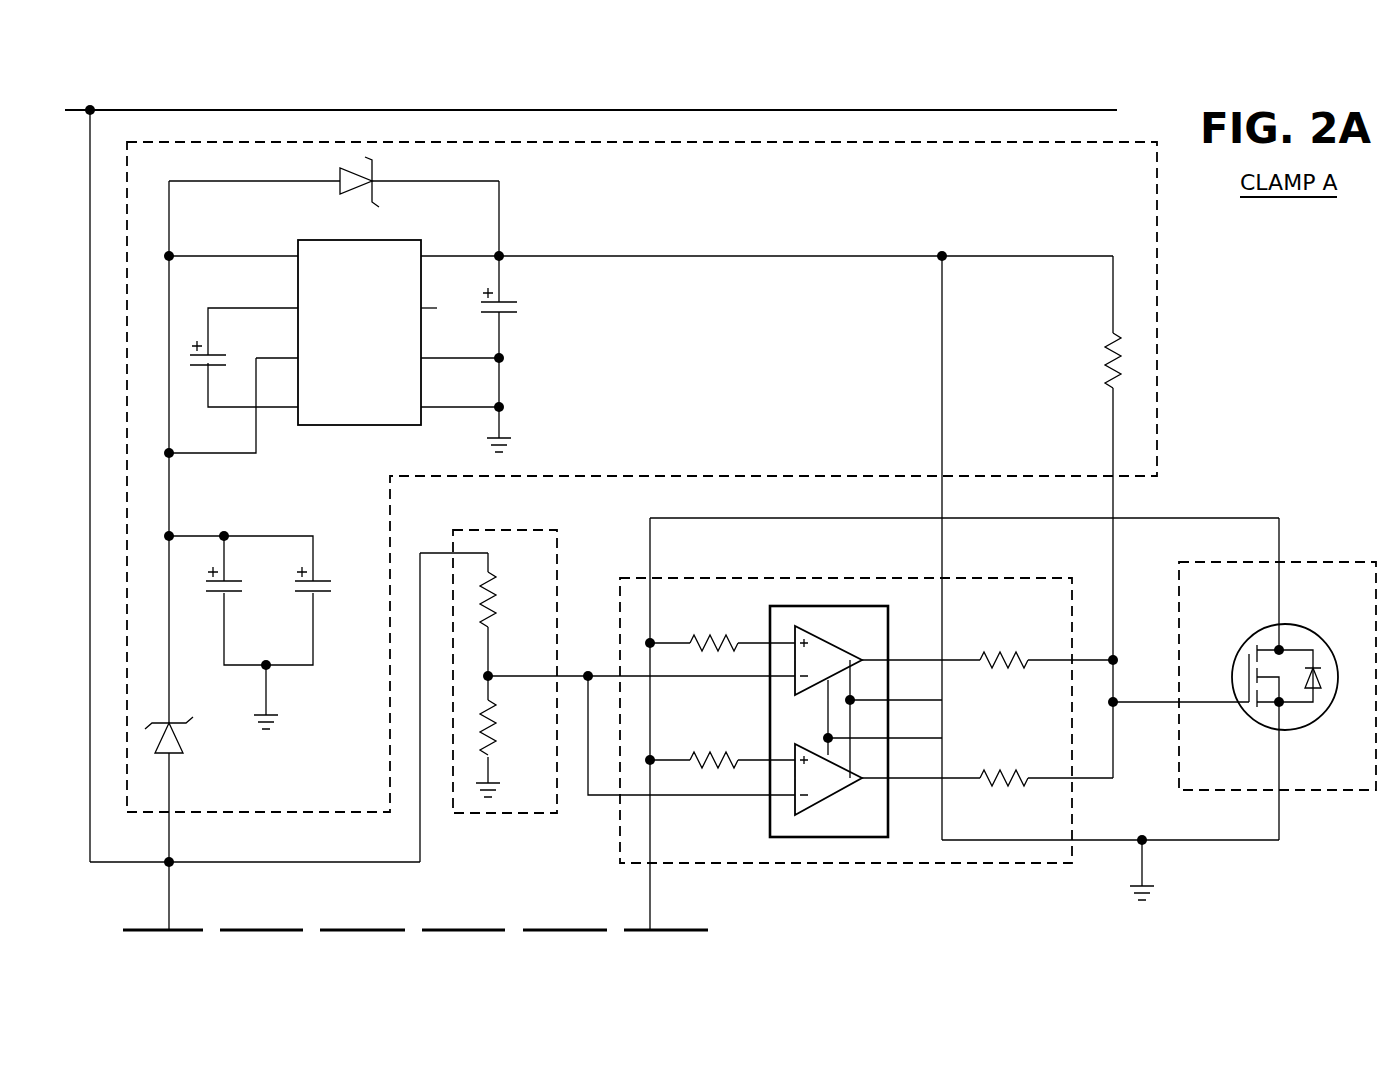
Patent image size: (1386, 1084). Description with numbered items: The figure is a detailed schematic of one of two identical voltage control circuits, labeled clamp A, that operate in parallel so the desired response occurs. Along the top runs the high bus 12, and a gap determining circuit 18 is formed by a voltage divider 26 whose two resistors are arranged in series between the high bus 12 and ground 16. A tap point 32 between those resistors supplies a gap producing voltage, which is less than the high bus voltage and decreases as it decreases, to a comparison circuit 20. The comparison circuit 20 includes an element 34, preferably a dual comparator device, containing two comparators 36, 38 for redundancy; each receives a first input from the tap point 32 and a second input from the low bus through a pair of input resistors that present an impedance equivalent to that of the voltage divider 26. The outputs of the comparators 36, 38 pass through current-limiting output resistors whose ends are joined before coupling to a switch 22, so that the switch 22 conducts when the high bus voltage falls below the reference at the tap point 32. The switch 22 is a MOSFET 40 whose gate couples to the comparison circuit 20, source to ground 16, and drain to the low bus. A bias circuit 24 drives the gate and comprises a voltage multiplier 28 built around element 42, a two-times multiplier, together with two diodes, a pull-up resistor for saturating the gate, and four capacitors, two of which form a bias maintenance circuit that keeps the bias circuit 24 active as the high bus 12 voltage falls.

The high bus 12 is at (808, 110).
The ground 16 is at (516, 438).
The gap determining circuit 18 is at (500, 816).
The comparison circuit 20 is at (795, 578).
The switch 22 is at (1327, 562).
The bias circuit 24 is at (1157, 343).
The voltage divider 26 is at (558, 548).
The voltage multiplier 28 is at (389, 238).
The tap point 32 is at (494, 672).
The element 34 is at (770, 828).
The comparator 36 is at (822, 650).
The comparator 38 is at (822, 795).
The MOSFET 40 is at (1258, 632).
The element 42 is at (342, 427).